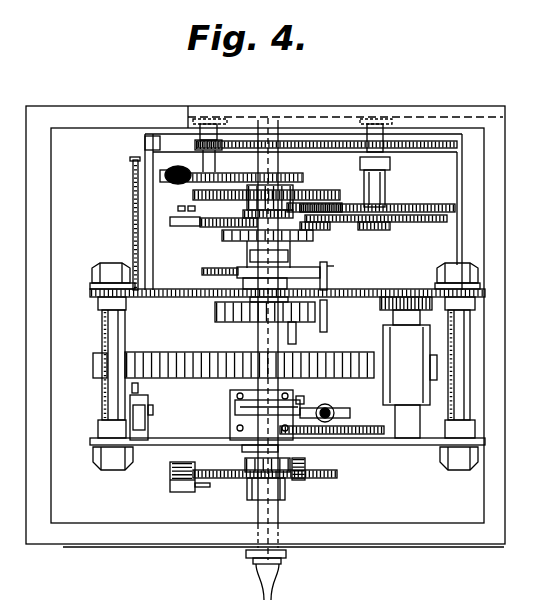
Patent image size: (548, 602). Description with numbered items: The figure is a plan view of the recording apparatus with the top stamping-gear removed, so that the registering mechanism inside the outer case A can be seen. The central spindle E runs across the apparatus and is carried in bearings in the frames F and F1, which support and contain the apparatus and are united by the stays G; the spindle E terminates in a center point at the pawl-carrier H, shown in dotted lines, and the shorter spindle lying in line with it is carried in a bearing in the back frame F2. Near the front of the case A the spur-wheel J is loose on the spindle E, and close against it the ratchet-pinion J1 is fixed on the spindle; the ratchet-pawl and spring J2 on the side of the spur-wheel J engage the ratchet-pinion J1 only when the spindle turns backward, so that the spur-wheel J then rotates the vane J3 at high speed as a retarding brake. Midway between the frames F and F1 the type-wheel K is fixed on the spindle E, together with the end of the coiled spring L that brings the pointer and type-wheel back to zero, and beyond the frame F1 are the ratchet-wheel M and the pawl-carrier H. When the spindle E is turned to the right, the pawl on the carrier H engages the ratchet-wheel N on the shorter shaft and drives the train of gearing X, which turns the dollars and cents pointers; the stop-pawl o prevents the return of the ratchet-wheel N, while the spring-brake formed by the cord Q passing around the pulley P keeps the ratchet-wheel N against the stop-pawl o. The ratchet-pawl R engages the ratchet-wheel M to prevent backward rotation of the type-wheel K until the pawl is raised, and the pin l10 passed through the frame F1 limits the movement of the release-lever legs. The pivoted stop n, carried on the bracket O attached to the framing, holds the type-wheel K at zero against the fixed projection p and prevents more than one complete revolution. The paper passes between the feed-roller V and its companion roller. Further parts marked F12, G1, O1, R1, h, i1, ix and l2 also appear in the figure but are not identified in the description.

The outer case A is at (265, 322).
The central spindle E is at (278, 518).
The frame F is at (187, 440).
The frame F1 is at (180, 294).
The back frame F2 is at (406, 292).
The rack bar F12 is at (303, 152).
The stays G is at (470, 405).
The bolt G1 is at (108, 335).
The pawl-carrier H is at (312, 236).
The type-wheel K is at (178, 353).
The coiled spring L is at (265, 310).
The ratchet-wheel M is at (220, 263).
The ratchet-wheel N is at (287, 212).
The bracket O is at (150, 410).
The worm O1 is at (175, 168).
The pulley P is at (218, 146).
The cord Q is at (266, 197).
The ratchet-pawl R is at (245, 169).
The shaft R1 is at (278, 271).
The feed-roller V is at (408, 367).
The train of gearing X is at (377, 213).
The pivot h is at (335, 409).
The bracket i1 is at (232, 418).
The stop ix is at (302, 392).
The lever l2 is at (300, 333).
The pin l10 is at (328, 276).
The pivoted stop n is at (136, 405).
The stop-pawl o is at (192, 226).
The fixed projection p is at (132, 388).
The spur-wheel J is at (300, 478).
The ratchet-pinion J1 is at (245, 462).
The ratchet-pawl and spring J2 is at (305, 466).
The vane J3 is at (190, 486).